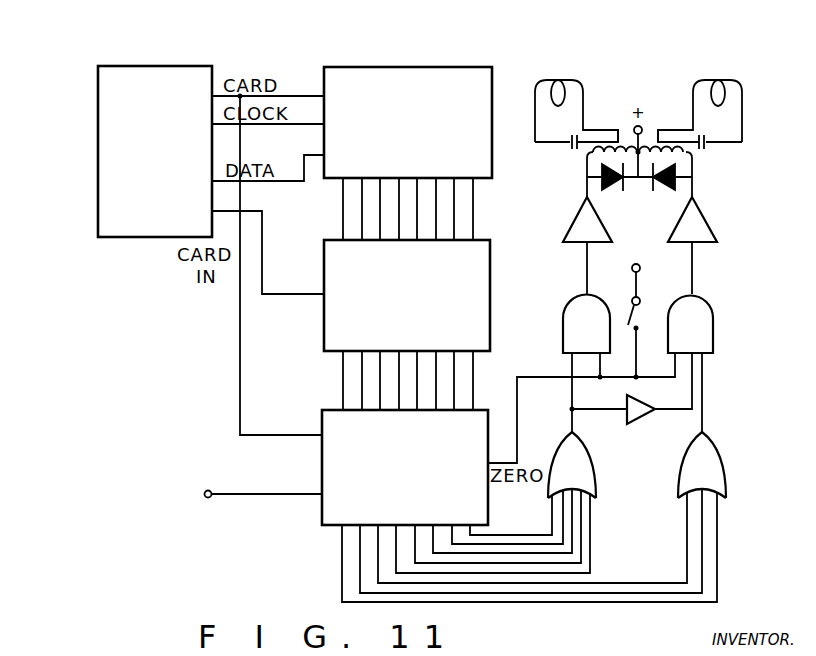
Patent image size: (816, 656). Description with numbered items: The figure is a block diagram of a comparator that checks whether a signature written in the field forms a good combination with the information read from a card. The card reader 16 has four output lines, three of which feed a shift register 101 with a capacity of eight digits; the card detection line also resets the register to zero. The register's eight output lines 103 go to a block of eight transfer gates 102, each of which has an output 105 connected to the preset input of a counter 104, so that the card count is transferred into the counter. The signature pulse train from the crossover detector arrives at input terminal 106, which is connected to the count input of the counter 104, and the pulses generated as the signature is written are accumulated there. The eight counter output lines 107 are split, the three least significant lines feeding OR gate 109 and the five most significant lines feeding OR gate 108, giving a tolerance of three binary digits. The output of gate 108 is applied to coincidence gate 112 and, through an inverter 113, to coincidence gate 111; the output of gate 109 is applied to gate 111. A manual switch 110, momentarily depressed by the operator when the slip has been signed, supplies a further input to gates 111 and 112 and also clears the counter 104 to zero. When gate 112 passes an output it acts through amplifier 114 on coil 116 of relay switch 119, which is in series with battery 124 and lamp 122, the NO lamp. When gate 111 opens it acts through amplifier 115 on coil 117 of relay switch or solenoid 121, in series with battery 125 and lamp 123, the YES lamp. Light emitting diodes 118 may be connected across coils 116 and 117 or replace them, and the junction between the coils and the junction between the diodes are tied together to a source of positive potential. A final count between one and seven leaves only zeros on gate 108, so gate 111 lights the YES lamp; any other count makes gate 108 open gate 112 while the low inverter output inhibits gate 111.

The card reader 16 is at (132, 71).
The shift register 101 is at (374, 74).
The transfer gates 102 is at (482, 283).
The output lines 103 is at (455, 208).
The counter 104 is at (324, 468).
The transfer gate outputs 105 is at (343, 393).
The input terminal 106 is at (208, 498).
The counter output lines 107 is at (658, 583).
The OR gate 108 is at (584, 467).
The OR gate 109 is at (721, 467).
The manual switch 110 is at (630, 314).
The coincidence gate 111 is at (699, 317).
The coincidence gate 112 is at (572, 316).
The inverter 113 is at (644, 406).
The amplifier 114 is at (573, 226).
The amplifier 115 is at (697, 232).
The coil 116 is at (594, 151).
The coil 117 is at (684, 152).
The light emitting diodes 118 is at (670, 193).
The relay switch 119 is at (586, 129).
The relay switch or solenoid 121 is at (689, 129).
The lamp 122 is at (560, 93).
The lamp 123 is at (721, 93).
The battery 124 is at (573, 137).
The battery 125 is at (700, 137).